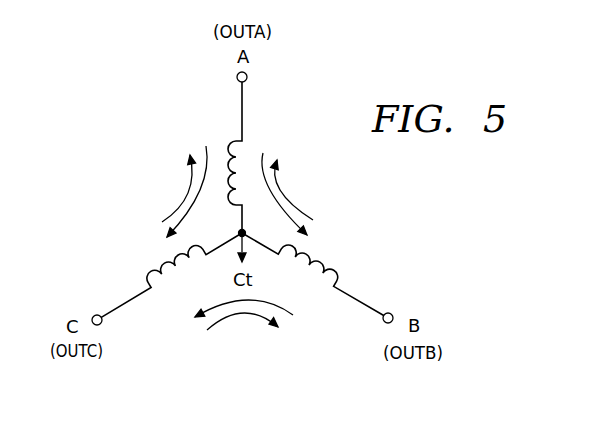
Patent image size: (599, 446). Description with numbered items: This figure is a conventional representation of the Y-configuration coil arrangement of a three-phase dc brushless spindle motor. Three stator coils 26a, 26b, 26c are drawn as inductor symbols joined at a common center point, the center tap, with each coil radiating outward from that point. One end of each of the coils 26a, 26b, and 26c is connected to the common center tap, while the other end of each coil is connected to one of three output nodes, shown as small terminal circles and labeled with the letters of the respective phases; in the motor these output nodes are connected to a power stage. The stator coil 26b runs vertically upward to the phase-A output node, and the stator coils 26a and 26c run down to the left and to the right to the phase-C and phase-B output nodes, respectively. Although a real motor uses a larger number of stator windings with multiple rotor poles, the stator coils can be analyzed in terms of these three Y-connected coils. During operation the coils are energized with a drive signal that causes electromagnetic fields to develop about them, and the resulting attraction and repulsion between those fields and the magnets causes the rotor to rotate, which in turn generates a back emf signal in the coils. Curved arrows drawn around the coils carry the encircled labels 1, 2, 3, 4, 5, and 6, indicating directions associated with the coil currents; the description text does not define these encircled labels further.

The stator coil 26a is at (158, 262).
The stator coil 26b is at (228, 142).
The stator coil 26c is at (330, 262).
The current direction arrow 1 is at (262, 182).
The current direction arrow 2 is at (207, 172).
The current direction arrow 3 is at (253, 300).
The current direction arrow 4 is at (288, 203).
The current direction arrow 5 is at (188, 193).
The current direction arrow 6 is at (222, 318).